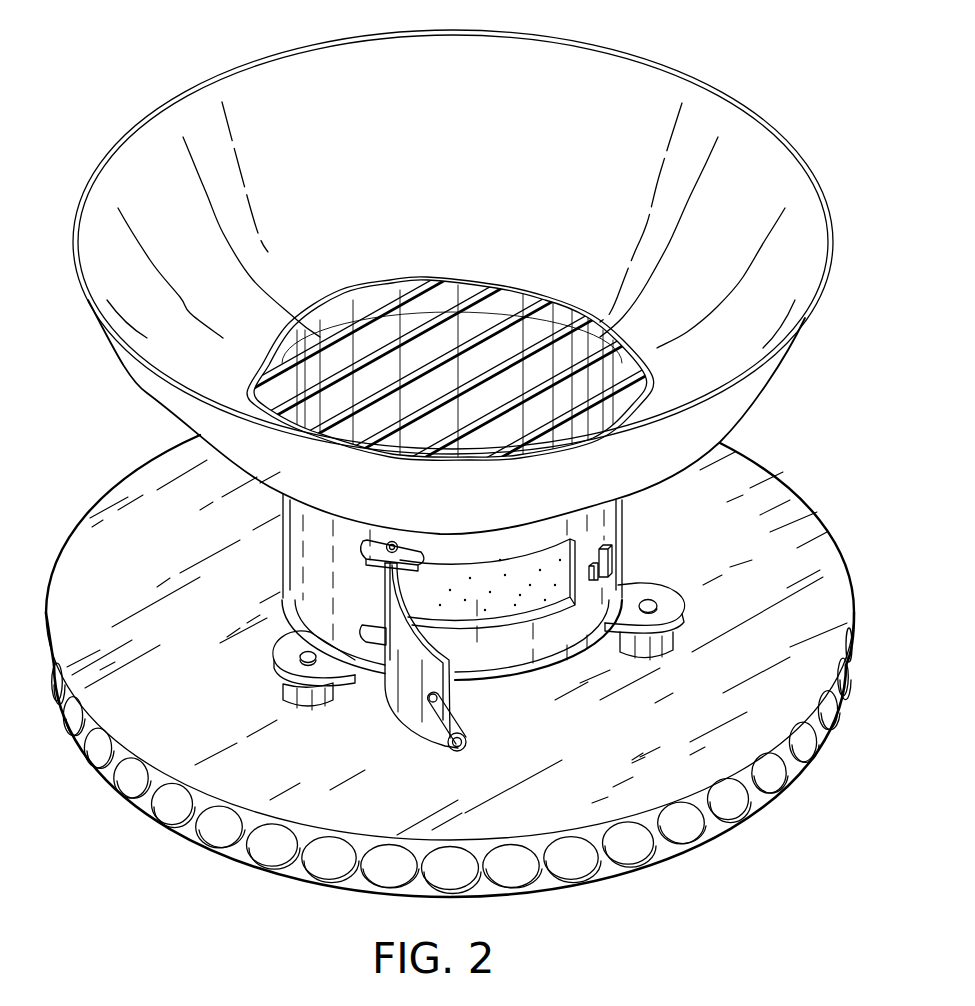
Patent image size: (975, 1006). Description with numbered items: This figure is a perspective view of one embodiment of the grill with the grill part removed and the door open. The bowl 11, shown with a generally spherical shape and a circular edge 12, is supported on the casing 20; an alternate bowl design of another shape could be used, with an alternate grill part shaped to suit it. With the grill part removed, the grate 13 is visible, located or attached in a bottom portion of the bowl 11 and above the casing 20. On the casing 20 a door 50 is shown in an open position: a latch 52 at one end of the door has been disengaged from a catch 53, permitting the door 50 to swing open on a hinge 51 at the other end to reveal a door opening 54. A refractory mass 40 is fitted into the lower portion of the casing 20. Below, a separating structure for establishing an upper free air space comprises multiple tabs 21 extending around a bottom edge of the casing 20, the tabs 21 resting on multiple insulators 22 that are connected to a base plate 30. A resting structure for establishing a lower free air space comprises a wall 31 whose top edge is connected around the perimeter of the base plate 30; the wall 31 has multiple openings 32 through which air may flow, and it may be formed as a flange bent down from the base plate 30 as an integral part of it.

The bowl 11 is at (147, 394).
The circular edge 12 is at (267, 53).
The grate 13 is at (506, 306).
The casing 20 is at (283, 546).
The tabs 21 is at (682, 604).
The insulators 22 is at (673, 633).
The base plate 30 is at (263, 782).
The wall 31 is at (252, 866).
The openings 32 is at (378, 864).
The refractory mass 40 is at (538, 590).
The door 50 is at (412, 683).
The hinge 51 is at (387, 561).
The latch 52 is at (464, 730).
The catch 53 is at (610, 563).
The door opening 54 is at (494, 650).